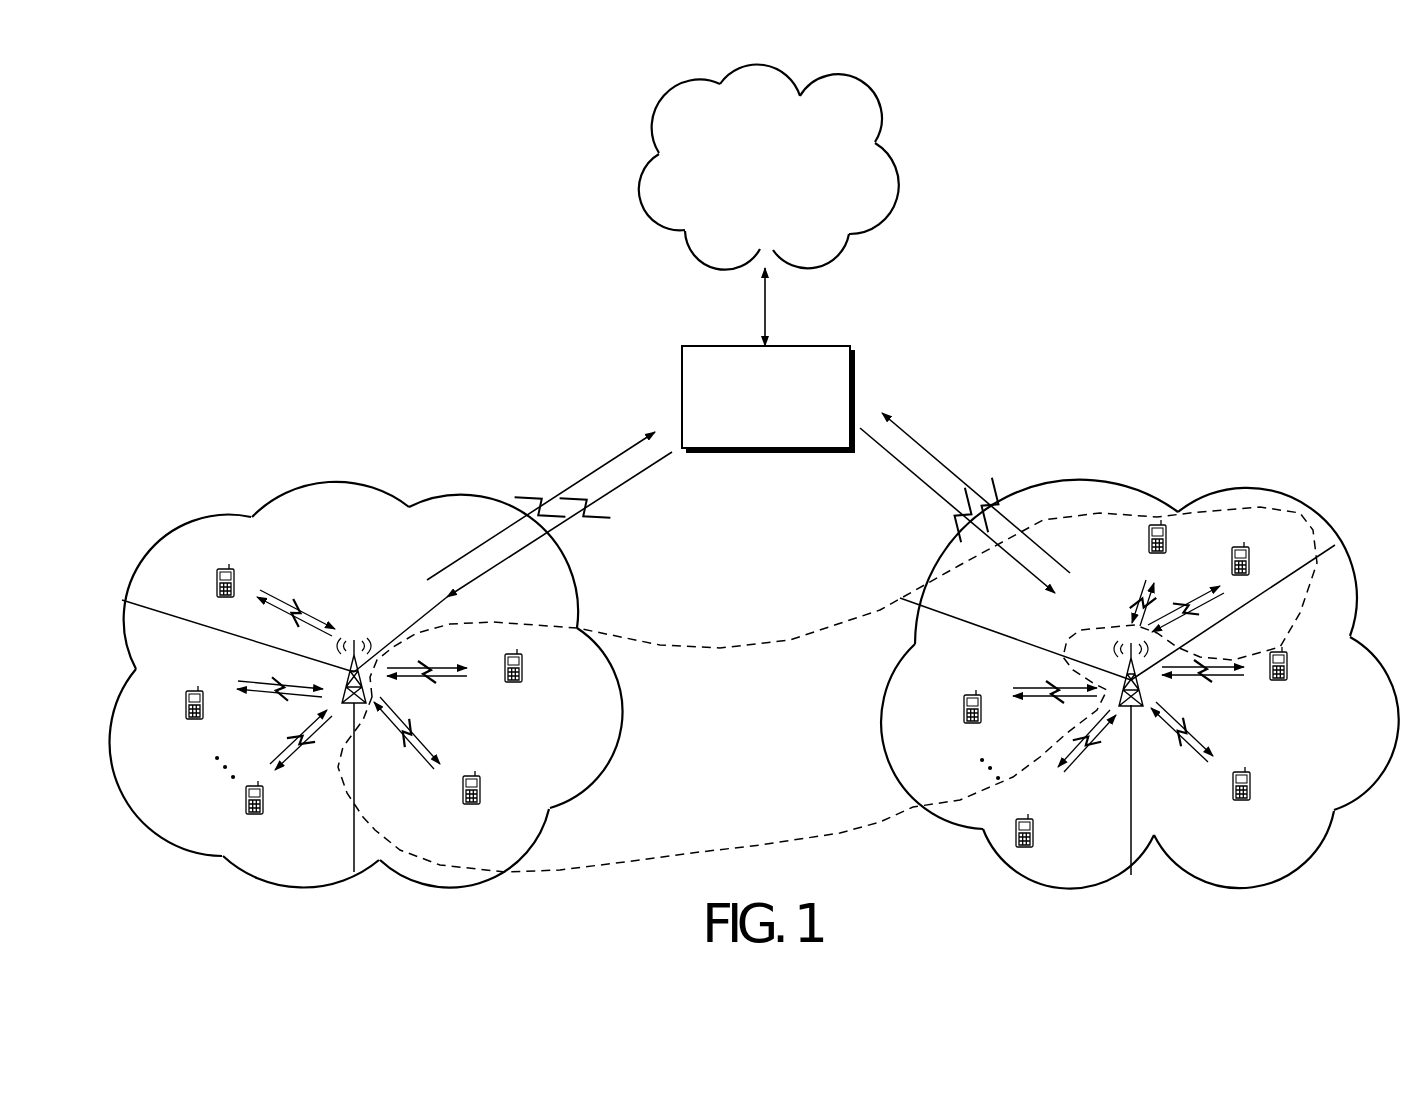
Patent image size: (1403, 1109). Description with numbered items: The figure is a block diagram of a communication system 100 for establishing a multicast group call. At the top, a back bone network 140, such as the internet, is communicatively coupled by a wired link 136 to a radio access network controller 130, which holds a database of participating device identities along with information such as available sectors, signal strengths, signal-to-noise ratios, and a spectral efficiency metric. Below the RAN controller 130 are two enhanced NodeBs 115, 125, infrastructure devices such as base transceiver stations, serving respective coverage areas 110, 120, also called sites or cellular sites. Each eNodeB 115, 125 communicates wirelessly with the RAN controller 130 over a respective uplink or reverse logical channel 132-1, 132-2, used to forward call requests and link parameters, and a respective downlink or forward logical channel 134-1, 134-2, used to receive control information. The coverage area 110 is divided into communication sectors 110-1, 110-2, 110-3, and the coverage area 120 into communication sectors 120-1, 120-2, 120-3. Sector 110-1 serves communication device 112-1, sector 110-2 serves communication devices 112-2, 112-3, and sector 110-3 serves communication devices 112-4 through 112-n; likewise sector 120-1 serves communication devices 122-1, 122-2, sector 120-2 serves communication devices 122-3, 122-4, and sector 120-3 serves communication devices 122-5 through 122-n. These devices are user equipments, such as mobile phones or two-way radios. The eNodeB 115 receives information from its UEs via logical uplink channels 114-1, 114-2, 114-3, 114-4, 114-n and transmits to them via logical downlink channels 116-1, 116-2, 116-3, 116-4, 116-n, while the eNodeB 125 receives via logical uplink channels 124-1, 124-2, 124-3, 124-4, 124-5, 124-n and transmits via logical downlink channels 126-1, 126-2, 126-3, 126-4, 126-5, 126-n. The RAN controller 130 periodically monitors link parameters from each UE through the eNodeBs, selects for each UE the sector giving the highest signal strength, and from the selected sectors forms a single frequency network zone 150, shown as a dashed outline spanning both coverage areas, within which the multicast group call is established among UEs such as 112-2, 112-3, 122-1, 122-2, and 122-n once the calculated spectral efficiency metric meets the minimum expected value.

The communication system 100 is at (1318, 117).
The coverage area 110 is at (198, 518).
The communication sector 110-1 is at (239, 593).
The communication sector 110-2 is at (475, 681).
The communication sector 110-3 is at (313, 787).
The communication device 112-1 is at (217, 580).
The communication device 112-2 is at (522, 668).
The communication device 112-3 is at (472, 804).
The communication device 112-4 is at (245, 798).
The communication device 112-n is at (188, 720).
The logical uplink channel 114-1 is at (288, 607).
The logical uplink channel 114-2 is at (413, 680).
The logical uplink channel 114-3 is at (428, 767).
The logical uplink channel 114-4 is at (280, 748).
The logical uplink channel 114-n is at (258, 684).
The enhanced NodeB 115 is at (360, 642).
The logical downlink channel 116-1 is at (282, 613).
The logical downlink channel 116-2 is at (417, 663).
The logical downlink channel 116-3 is at (418, 738).
The logical downlink channel 116-4 is at (287, 758).
The logical downlink channel 116-n is at (307, 700).
The coverage area 120 is at (1300, 500).
The communication sector 120-1 is at (1015, 628).
The communication sector 120-2 is at (1254, 657).
The communication sector 120-3 is at (1016, 748).
The communication device 122-1 is at (1149, 535).
The communication device 122-2 is at (1267, 545).
The communication device 122-3 is at (1288, 668).
The communication device 122-4 is at (1242, 801).
The communication device 122-5 is at (1034, 828).
The communication device 122-n is at (968, 727).
The logical uplink channel 124-1 is at (1133, 610).
The logical uplink channel 124-2 is at (1222, 590).
The logical uplink channel 124-3 is at (1192, 677).
The logical uplink channel 124-4 is at (1200, 758).
The logical uplink channel 124-5 is at (1062, 767).
The logical uplink channel 124-n is at (1075, 700).
The enhanced NodeB 125 is at (1122, 667).
The logical downlink channel 126-1 is at (1180, 583).
The logical downlink channel 126-2 is at (1178, 620).
The logical downlink channel 126-3 is at (1248, 663).
The logical downlink channel 126-4 is at (1195, 736).
The logical downlink channel 126-5 is at (1103, 737).
The logical downlink channel 126-n is at (1073, 684).
The radio access network controller 130 is at (703, 345).
The uplink logical channel 132-1 is at (594, 472).
The uplink logical channel 132-2 is at (932, 451).
The downlink logical channel 134-1 is at (623, 482).
The downlink logical channel 134-2 is at (900, 471).
The wired link 136 is at (767, 303).
The back bone network 140 is at (675, 83).
The single frequency network zone 150 is at (786, 642).